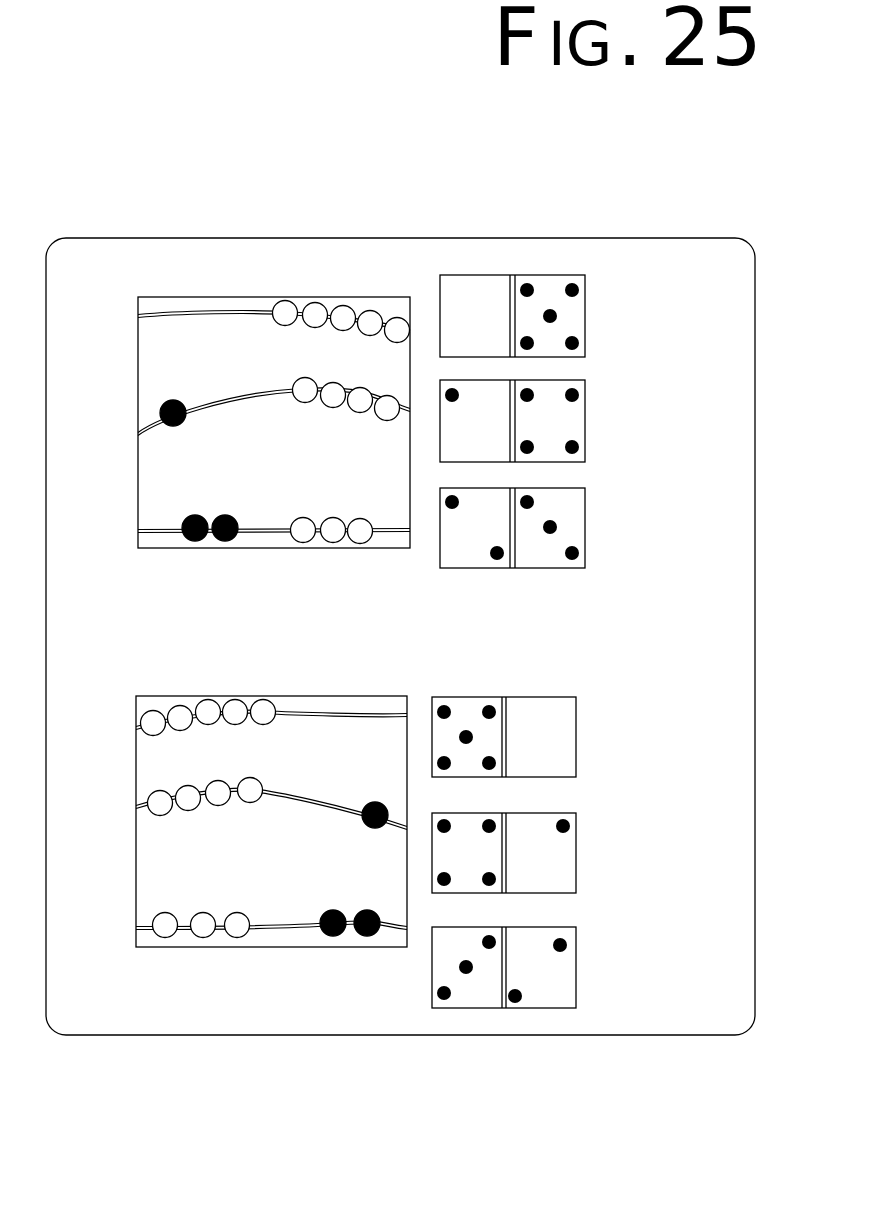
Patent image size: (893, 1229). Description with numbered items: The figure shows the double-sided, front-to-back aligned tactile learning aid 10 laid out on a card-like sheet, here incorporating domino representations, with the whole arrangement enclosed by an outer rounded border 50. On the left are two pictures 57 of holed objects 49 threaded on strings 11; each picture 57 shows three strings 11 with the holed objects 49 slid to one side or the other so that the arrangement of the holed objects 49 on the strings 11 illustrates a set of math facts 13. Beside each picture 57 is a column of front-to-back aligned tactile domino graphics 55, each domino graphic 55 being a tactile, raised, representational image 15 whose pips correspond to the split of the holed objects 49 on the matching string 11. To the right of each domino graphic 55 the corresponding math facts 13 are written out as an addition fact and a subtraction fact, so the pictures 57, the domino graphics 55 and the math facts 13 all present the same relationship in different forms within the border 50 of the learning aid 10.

The double-sided, front-to-back aligned tactile learning aid 10 is at (408, 169).
The strings 11 is at (165, 315).
The math facts 13 is at (725, 318).
The tactile, raised, representational image 15 is at (580, 280).
The holed objects 49 is at (283, 313).
The board / frame 50 is at (211, 1036).
The front-to-back aligned tactile domino graphic 55 is at (505, 275).
The pictures 57 is at (138, 478).